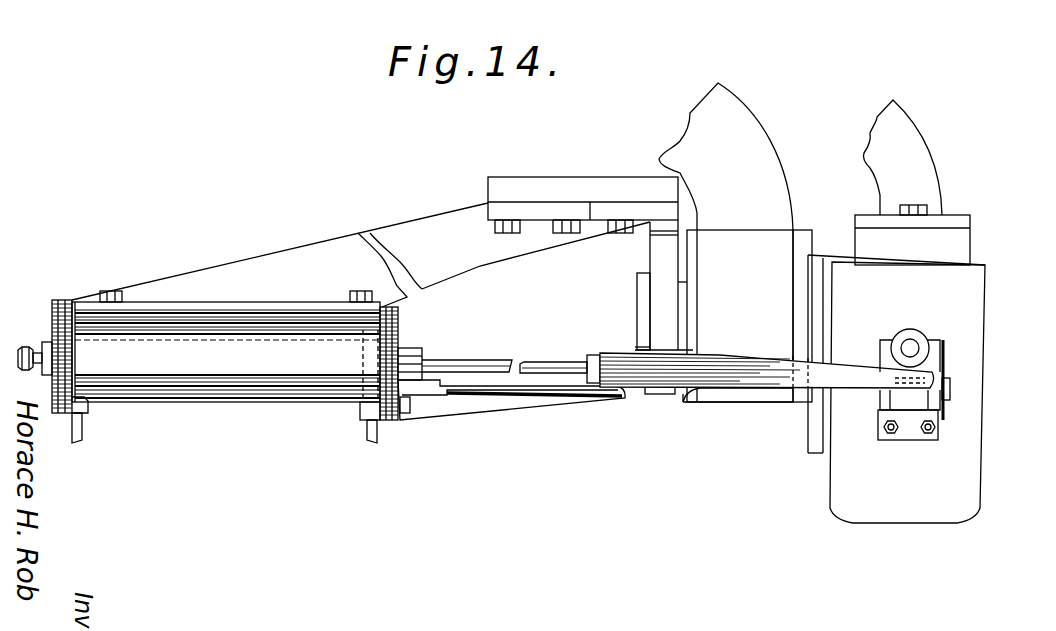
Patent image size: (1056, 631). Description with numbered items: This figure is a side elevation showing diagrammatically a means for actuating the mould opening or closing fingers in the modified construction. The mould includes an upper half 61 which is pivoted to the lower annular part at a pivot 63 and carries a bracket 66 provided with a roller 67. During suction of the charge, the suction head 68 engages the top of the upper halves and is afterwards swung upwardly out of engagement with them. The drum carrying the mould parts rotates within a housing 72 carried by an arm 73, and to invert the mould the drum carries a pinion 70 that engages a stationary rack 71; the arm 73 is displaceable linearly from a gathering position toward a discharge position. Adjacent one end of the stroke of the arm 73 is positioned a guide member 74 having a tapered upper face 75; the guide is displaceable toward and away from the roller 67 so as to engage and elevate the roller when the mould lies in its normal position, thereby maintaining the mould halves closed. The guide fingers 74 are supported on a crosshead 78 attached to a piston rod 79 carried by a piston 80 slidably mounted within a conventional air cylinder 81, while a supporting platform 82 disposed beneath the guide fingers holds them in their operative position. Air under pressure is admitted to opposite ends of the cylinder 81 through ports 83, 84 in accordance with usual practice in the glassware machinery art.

The upper half 61 is at (960, 338).
The pivot 63 is at (950, 393).
The bracket 66 is at (945, 367).
The roller 67 is at (913, 330).
The suction head 68 is at (933, 169).
The pinion 70 is at (657, 288).
The stationary rack 71 is at (662, 220).
The housing 72 is at (749, 316).
The arm 73 is at (757, 134).
The guide member 74 is at (818, 392).
The tapered upper face 75 is at (845, 363).
The crosshead 78 is at (610, 352).
The piston rod 79 is at (492, 361).
The piston 80 is at (396, 363).
The air cylinder 81 is at (208, 355).
The supporting platform 82 is at (605, 396).
The port 83 is at (368, 433).
The port 84 is at (82, 430).